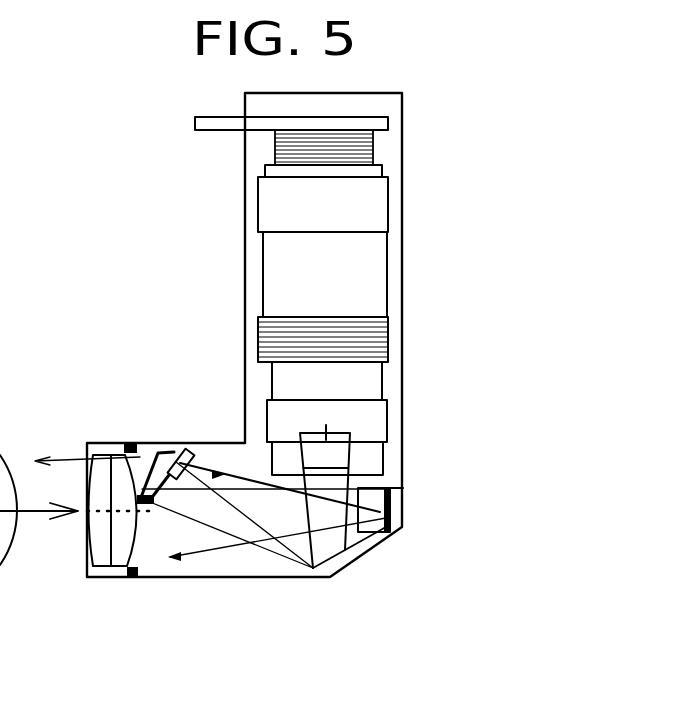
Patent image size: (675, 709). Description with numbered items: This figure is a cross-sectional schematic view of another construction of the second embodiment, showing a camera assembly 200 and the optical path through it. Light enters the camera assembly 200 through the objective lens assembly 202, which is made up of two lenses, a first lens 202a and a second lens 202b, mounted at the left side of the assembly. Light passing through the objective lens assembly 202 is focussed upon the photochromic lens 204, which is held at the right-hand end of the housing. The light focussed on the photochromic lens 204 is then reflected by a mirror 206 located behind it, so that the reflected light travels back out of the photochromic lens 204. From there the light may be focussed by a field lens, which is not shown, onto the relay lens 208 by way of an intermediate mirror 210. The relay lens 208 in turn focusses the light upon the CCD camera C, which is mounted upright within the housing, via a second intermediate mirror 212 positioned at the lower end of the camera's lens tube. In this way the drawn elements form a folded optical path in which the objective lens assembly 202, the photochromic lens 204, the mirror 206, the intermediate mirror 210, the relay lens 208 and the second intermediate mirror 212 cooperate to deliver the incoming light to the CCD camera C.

The camera assembly 200 is at (403, 290).
The CCD camera C is at (370, 260).
The objective lens assembly 202 is at (136, 540).
The first lens 202a is at (102, 553).
The second lens 202b is at (127, 553).
The photochromic lens 204 is at (390, 533).
The mirror 206 is at (387, 492).
The relay lens 208 is at (192, 448).
The intermediate mirror 210 is at (141, 446).
The second intermediate mirror 212 is at (345, 566).